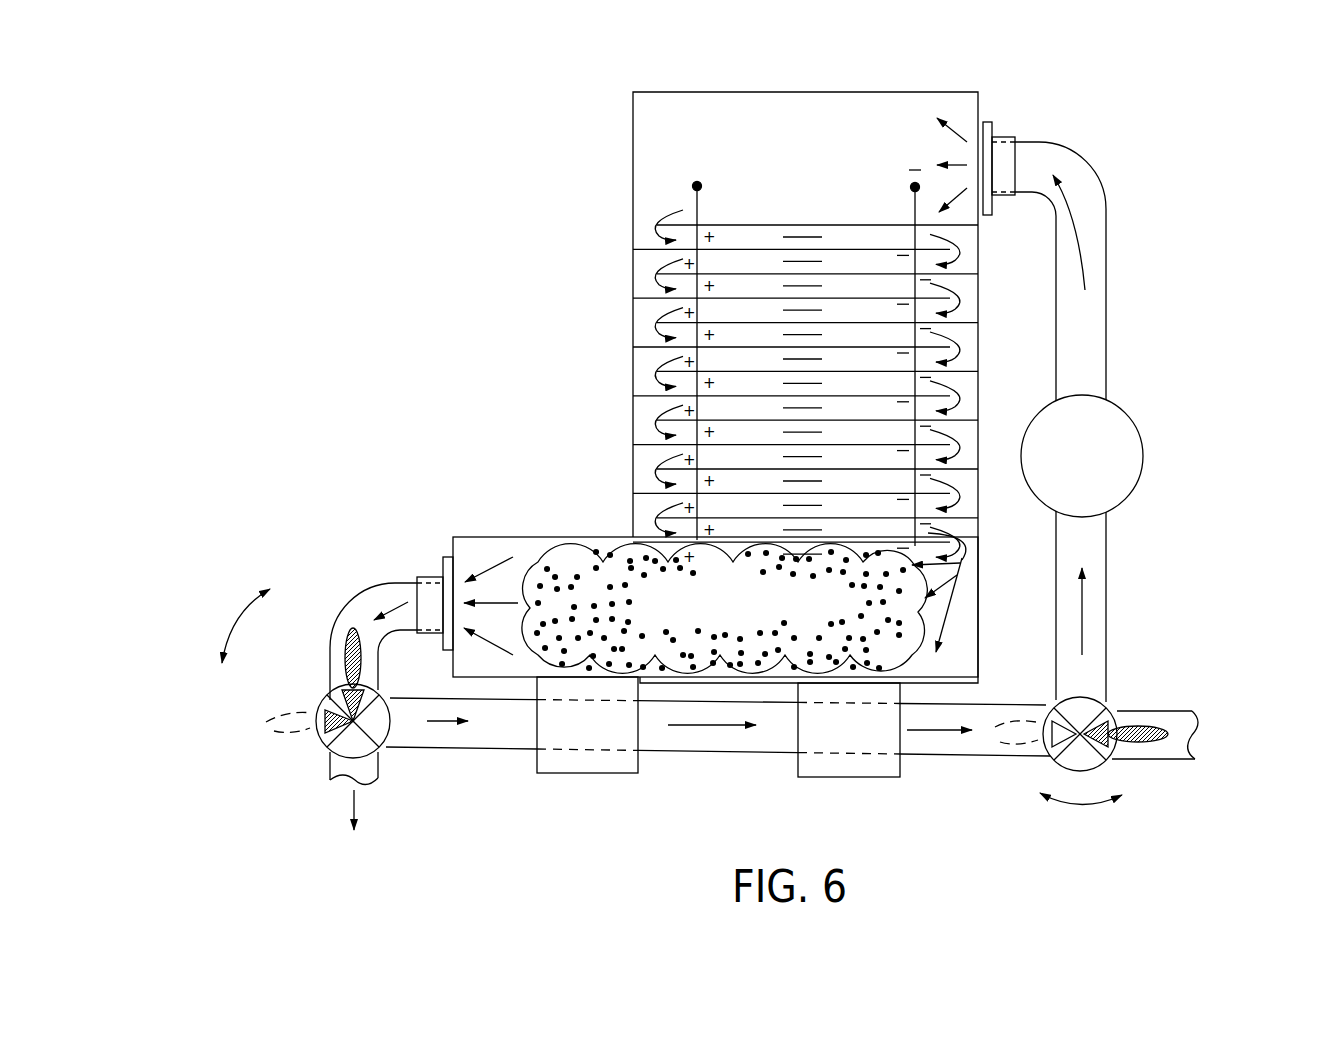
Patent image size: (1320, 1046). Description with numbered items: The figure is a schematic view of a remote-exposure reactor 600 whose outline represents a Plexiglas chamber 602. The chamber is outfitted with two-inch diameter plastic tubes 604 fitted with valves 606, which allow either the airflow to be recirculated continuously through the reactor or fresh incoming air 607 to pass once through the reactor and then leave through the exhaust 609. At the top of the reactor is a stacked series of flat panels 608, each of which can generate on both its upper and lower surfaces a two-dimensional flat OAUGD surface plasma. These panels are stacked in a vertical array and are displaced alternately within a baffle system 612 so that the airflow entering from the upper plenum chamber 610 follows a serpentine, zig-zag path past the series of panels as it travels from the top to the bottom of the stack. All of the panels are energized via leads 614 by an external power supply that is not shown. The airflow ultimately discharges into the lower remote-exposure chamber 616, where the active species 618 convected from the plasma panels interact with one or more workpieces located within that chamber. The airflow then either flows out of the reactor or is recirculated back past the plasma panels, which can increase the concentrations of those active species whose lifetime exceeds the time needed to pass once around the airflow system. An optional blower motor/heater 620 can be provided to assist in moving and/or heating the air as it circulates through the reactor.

The remote-exposure reactor 600 is at (1258, 83).
The Plexiglas chamber 602 is at (388, 323).
The plastic tubes 604 is at (390, 583).
The valves 606 is at (322, 738).
The fresh incoming air 607 is at (1212, 735).
The flat panels 608 is at (1165, 327).
The exhaust 609 is at (355, 845).
The upper plenum chamber 610 is at (832, 148).
The baffle system 612 is at (816, 220).
The leads 614 is at (903, 183).
The remote-exposure chamber 616 is at (525, 535).
The active species 618 is at (724, 609).
The blower motor/heater 620 is at (1142, 475).